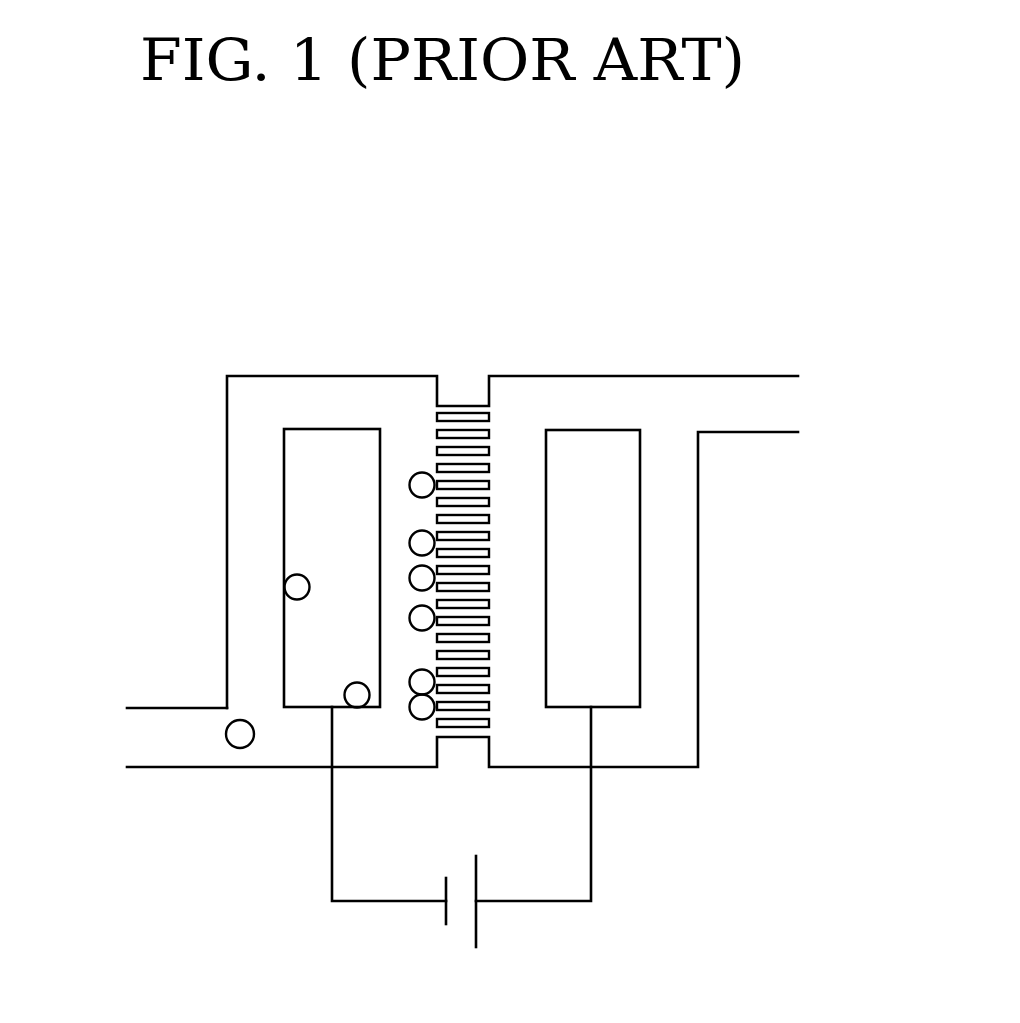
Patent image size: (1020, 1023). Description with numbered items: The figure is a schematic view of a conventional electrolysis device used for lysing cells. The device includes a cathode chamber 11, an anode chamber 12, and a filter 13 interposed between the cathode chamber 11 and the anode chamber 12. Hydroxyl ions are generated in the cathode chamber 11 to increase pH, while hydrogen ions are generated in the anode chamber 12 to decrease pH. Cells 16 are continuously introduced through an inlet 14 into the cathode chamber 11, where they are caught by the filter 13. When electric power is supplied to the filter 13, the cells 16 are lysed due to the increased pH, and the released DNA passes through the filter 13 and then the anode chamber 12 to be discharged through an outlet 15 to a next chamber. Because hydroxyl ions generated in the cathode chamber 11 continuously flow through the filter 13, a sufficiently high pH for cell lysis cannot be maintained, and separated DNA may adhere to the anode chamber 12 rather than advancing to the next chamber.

The cathode chamber 11 is at (347, 430).
The anode chamber 12 is at (606, 430).
The filter 13 is at (462, 405).
The inlet 14 is at (140, 738).
The outlet 15 is at (768, 404).
The cells 16 is at (235, 747).